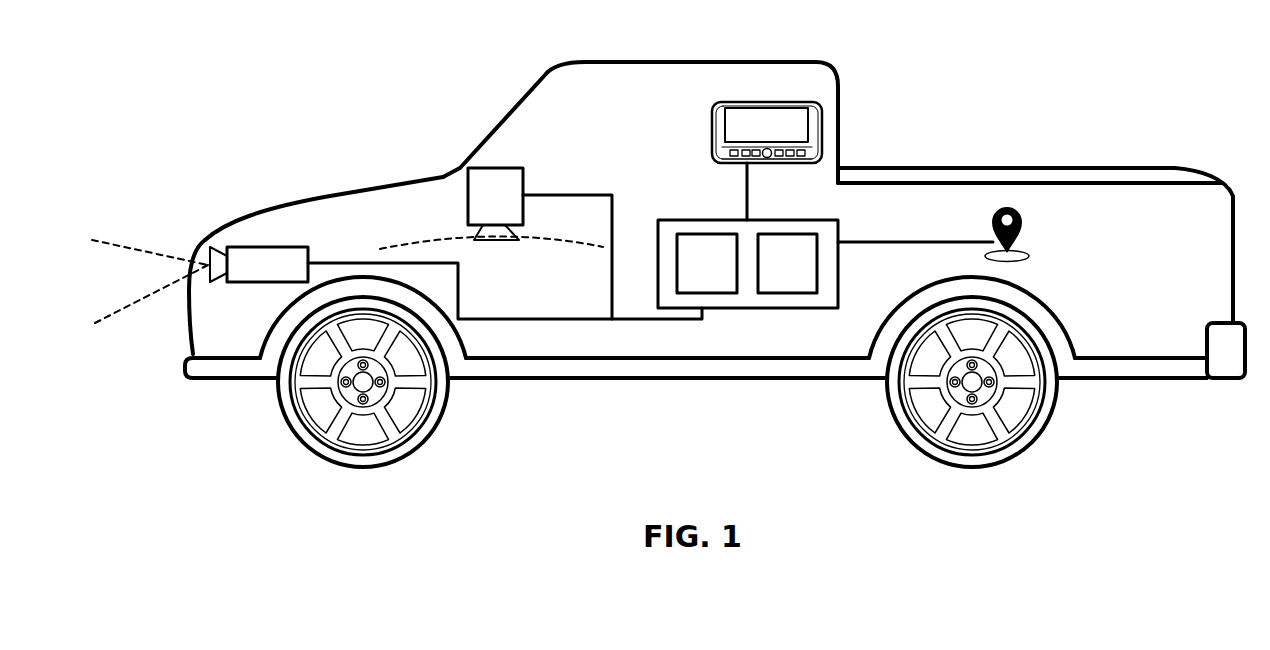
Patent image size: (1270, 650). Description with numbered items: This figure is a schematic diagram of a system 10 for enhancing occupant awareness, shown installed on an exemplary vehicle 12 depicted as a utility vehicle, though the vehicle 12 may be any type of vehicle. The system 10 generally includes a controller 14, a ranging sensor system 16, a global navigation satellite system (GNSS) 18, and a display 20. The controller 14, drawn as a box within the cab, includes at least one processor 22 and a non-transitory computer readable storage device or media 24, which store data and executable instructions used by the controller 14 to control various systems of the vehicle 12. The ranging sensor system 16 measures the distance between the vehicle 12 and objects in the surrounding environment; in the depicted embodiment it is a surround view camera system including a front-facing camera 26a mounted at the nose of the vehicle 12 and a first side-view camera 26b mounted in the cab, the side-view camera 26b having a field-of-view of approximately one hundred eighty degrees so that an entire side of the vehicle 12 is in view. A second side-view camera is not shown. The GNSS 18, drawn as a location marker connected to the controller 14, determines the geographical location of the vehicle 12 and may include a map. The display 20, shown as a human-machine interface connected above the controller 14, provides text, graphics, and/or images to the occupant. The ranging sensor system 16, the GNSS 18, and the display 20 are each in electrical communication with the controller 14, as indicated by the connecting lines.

The system for enhancing occupant awareness 10 is at (474, 135).
The vehicle 12 is at (827, 63).
The controller 14 is at (825, 264).
The ranging sensor system 16 is at (526, 158).
The global navigation satellite system 18 is at (1023, 226).
The display 20 is at (724, 160).
The processor 22 is at (692, 276).
The computer readable storage device or media 24 is at (772, 276).
The front-facing camera 26a is at (246, 276).
The first side-view camera 26b is at (474, 206).